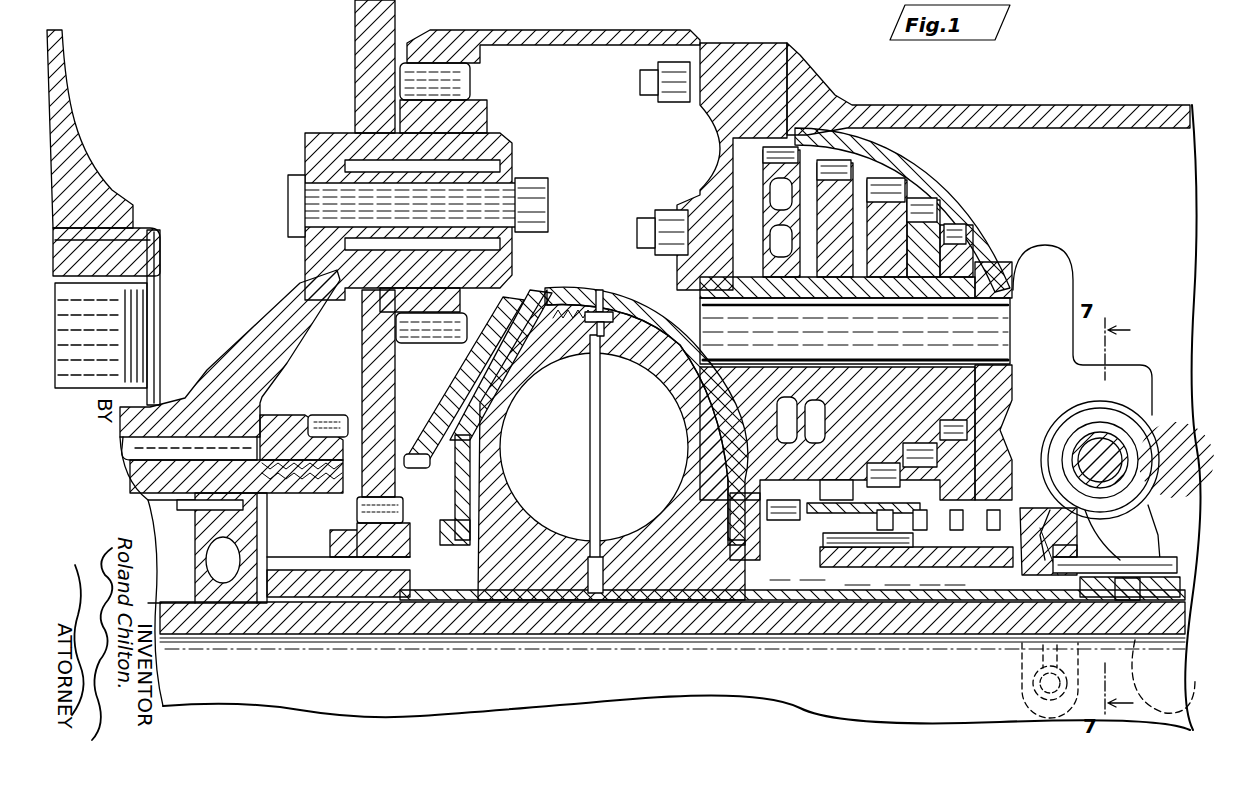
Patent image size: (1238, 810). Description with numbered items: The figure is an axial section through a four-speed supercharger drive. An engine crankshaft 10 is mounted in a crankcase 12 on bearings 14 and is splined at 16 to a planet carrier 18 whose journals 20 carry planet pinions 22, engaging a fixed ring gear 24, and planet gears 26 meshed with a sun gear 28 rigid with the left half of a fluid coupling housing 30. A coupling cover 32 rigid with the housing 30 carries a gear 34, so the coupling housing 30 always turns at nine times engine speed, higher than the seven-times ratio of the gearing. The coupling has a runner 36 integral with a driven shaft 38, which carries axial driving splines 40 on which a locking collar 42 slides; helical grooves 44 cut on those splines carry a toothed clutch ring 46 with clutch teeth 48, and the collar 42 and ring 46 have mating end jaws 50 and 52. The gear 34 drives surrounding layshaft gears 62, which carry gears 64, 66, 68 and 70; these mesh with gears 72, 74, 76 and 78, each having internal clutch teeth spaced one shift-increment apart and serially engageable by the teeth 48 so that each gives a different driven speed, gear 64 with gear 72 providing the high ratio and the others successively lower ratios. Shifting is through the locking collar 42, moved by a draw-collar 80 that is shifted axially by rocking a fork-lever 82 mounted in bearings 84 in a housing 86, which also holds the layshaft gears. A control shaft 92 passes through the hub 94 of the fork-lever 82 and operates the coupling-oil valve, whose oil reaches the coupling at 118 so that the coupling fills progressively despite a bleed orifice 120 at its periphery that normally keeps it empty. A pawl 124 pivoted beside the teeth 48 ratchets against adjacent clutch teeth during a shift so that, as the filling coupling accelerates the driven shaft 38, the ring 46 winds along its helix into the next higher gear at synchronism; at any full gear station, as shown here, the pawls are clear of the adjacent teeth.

The engine crankshaft 10 is at (168, 496).
The crankcase 12 is at (112, 188).
The bearings 14 is at (160, 302).
The spline 16 is at (195, 440).
The planet carrier 18 is at (290, 364).
The journals 20 is at (490, 165).
The planet pinions 22 is at (470, 98).
The fixed ring gear 24 is at (537, 30).
The planet gears 26 is at (397, 378).
The sun gear 28 is at (342, 527).
The fluid coupling housing 30 is at (500, 460).
The coupling cover 32 is at (712, 410).
The gear 34 is at (775, 580).
The runner 36 is at (686, 462).
The driven shaft 38 is at (1180, 568).
The axial driving splines 40 is at (1120, 580).
The locking collar 42 is at (1060, 565).
The helical grooves 44 is at (850, 585).
The toothed clutch ring 46 is at (895, 585).
The clutch teeth 48 is at (808, 580).
The end jaws 50 is at (950, 585).
The end jaws 52 is at (925, 585).
The layshaft gears 62 is at (760, 156).
The gear 64 is at (830, 166).
The gear 66 is at (870, 194).
The gear 68 is at (915, 212).
The gear 70 is at (950, 232).
The gear 72 is at (845, 520).
The gear 74 is at (930, 468).
The gear 76 is at (950, 440).
The gear 78 is at (981, 519).
The draw-collar 80 is at (1035, 508).
The fork-lever 82 is at (1100, 548).
The bearings 84 is at (1155, 432).
The housing 86 is at (1000, 246).
The control shaft 92 is at (1122, 466).
The hub 94 is at (1138, 448).
The duct communication 118 is at (548, 295).
The bleed orifice 120 is at (618, 312).
The pawl 124 is at (778, 580).